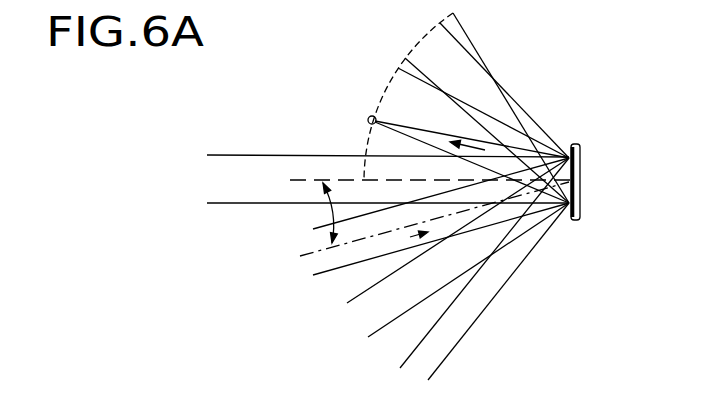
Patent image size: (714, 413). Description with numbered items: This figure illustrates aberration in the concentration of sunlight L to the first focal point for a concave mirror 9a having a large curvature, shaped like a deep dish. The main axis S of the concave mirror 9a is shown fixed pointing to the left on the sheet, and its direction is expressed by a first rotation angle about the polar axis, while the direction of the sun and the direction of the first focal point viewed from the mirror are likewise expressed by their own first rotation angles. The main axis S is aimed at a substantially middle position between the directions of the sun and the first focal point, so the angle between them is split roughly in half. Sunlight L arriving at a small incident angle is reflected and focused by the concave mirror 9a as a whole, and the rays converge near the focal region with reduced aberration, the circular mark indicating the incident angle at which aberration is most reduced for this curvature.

The concave mirror of a larger curvature 9a is at (581, 180).
The sunlight L is at (340, 270).
The main axis S is at (391, 179).